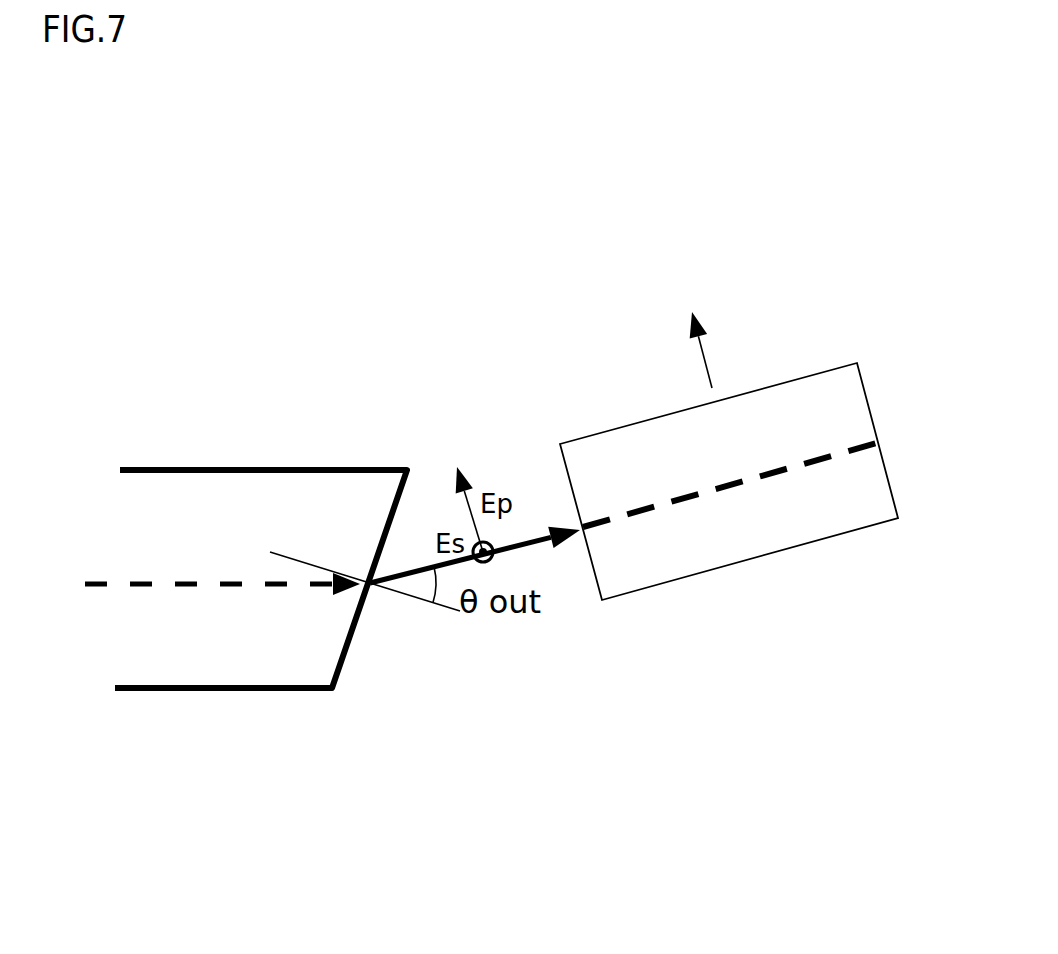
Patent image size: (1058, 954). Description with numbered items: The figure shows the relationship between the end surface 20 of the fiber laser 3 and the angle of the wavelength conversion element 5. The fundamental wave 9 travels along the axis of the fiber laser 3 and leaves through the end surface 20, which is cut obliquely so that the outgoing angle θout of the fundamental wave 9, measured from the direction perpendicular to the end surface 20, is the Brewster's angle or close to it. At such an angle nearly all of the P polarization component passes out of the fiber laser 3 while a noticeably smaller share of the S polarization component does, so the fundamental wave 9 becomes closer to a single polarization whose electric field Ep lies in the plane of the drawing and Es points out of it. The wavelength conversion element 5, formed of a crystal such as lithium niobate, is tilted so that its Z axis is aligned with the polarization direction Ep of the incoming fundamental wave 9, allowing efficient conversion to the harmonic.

The fiber laser 3 is at (201, 491).
The end surface 20 is at (343, 715).
The fundamental wave 9 is at (558, 569).
The wavelength conversion element 5 is at (738, 580).